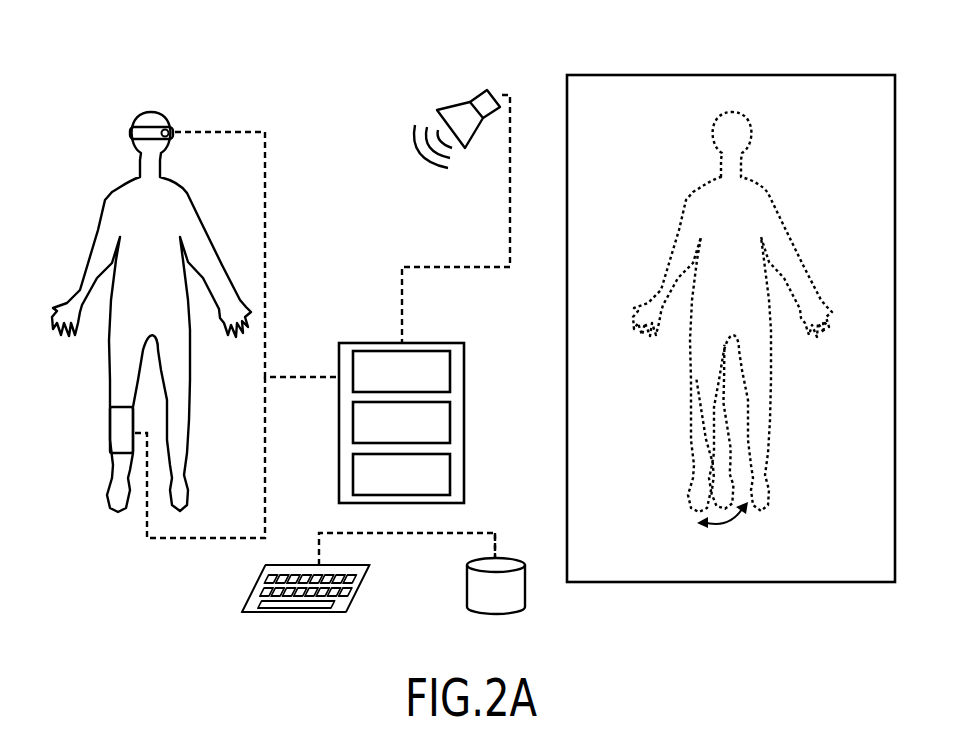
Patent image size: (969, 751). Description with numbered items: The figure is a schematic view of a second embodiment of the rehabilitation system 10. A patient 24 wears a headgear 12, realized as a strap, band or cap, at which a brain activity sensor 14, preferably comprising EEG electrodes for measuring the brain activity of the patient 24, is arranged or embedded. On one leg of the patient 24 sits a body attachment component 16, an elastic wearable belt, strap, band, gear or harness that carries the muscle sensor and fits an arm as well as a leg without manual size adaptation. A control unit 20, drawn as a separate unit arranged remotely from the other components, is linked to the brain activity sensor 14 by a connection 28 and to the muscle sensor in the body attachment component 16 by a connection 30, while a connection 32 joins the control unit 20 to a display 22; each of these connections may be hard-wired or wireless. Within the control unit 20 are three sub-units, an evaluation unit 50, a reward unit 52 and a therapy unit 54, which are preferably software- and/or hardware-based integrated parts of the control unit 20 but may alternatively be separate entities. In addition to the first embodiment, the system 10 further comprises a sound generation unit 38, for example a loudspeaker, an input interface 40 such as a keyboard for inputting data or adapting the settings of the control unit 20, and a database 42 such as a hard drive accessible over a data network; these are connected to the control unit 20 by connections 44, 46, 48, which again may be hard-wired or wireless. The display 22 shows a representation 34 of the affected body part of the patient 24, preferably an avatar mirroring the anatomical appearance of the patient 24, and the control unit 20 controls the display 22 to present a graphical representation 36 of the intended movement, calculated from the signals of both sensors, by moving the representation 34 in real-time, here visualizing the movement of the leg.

The rehabilitation system 10 is at (285, 127).
The headgear 12 is at (131, 126).
The brain activity sensor 14 is at (165, 128).
The body attachment component 16 is at (118, 427).
The control unit 20 is at (343, 348).
The display 22 is at (660, 90).
The patient 24 is at (117, 207).
The connection 28 is at (266, 203).
The connection 30 is at (266, 473).
The connection 32 is at (523, 377).
The representation 34 is at (760, 205).
The graphical representation of the intended movement 36 is at (716, 464).
The sound generation unit 38 is at (463, 115).
The input interface 40 is at (347, 603).
The database 42 is at (507, 602).
The connection 44 is at (513, 223).
The connection 46 is at (375, 533).
The connection 48 is at (463, 532).
The evaluation unit 50 is at (423, 358).
The reward unit 52 is at (430, 422).
The therapy unit 54 is at (430, 475).